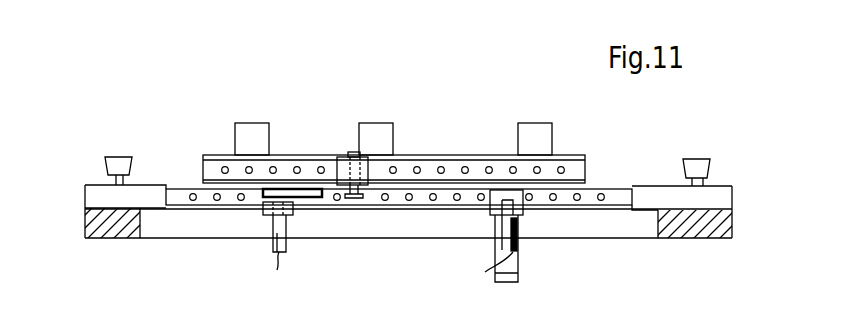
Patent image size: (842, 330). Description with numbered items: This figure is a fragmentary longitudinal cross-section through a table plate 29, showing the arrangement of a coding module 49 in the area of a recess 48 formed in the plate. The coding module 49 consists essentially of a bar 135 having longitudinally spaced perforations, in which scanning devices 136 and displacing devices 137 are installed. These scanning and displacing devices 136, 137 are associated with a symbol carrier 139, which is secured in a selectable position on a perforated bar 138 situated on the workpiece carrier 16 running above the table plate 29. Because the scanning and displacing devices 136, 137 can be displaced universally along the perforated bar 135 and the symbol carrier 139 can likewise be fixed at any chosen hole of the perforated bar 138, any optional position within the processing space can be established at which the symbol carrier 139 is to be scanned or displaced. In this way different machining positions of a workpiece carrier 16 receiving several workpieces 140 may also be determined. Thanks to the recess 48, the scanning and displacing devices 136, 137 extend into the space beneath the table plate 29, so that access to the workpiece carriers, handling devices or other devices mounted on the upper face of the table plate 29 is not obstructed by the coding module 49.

The workpieces 140 is at (256, 135).
The workpiece carrier 16 is at (482, 150).
The perforated bar 138 is at (448, 168).
The symbol carrier 139 is at (377, 164).
The table plate 29 is at (610, 186).
The bar 135 is at (206, 197).
The scanning devices 136 is at (273, 243).
The displacing devices 137 is at (331, 190).
The coding module 49 is at (357, 232).
The recess 48 is at (648, 222).